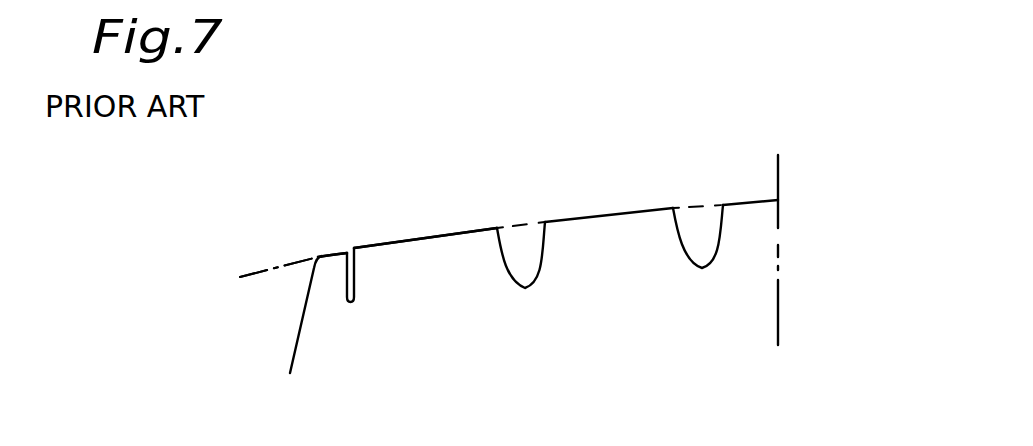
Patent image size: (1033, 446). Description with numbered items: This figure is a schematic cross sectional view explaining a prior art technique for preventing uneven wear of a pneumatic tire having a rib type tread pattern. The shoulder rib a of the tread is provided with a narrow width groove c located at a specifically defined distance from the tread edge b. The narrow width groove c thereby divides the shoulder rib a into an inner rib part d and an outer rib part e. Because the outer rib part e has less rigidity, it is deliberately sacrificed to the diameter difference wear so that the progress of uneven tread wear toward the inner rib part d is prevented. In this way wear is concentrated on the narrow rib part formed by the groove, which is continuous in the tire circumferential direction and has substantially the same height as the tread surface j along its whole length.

The shoulder rib a is at (453, 98).
The tread edge b is at (318, 257).
The narrow width groove c is at (352, 236).
The inner rib part d is at (447, 232).
The outer rib part e is at (333, 263).
The tread surface j is at (250, 273).